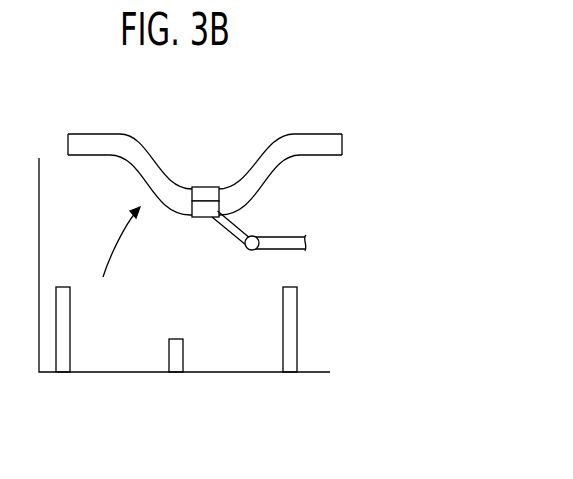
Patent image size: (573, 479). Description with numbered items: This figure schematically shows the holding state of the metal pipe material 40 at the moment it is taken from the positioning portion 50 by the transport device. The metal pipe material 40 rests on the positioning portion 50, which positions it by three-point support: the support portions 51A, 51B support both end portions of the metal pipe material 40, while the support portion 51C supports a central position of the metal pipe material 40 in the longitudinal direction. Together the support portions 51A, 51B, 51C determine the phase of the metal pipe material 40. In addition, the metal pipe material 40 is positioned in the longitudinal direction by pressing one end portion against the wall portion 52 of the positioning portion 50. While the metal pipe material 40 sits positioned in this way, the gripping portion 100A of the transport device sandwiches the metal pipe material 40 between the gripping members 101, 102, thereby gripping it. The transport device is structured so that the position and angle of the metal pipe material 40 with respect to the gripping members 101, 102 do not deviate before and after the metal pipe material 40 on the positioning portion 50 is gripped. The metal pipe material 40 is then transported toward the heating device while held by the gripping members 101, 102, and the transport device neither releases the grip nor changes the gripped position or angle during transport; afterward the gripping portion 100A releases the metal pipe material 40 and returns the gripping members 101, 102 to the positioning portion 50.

The metal pipe material 40 is at (292, 140).
The positioning portion 50 is at (180, 249).
The wall portion 52 is at (40, 205).
The support portion 51A is at (65, 356).
The support portion 51B is at (292, 356).
The support portion 51C is at (177, 356).
The gripping member 101 is at (204, 193).
The gripping member 102 is at (203, 218).
The gripping portion 100A is at (295, 222).